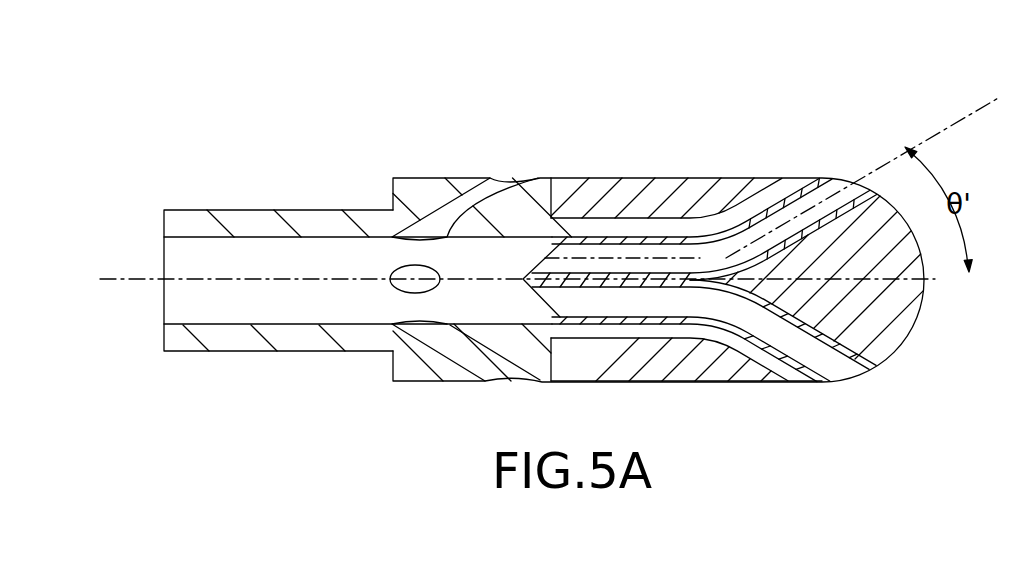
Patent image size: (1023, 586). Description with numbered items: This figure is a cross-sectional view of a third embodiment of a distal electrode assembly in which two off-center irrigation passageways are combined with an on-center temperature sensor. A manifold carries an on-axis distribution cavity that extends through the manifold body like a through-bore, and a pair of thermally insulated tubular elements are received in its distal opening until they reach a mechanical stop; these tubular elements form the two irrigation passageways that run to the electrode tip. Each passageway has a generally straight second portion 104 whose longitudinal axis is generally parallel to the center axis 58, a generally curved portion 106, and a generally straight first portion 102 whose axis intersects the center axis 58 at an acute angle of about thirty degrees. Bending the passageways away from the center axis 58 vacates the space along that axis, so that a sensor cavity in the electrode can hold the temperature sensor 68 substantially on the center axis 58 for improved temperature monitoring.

The center axis 58 is at (112, 277).
The second portion 104 is at (680, 250).
The curved portion 106 is at (723, 245).
The first portion 102 is at (803, 200).
The temperature sensor 68 is at (858, 328).